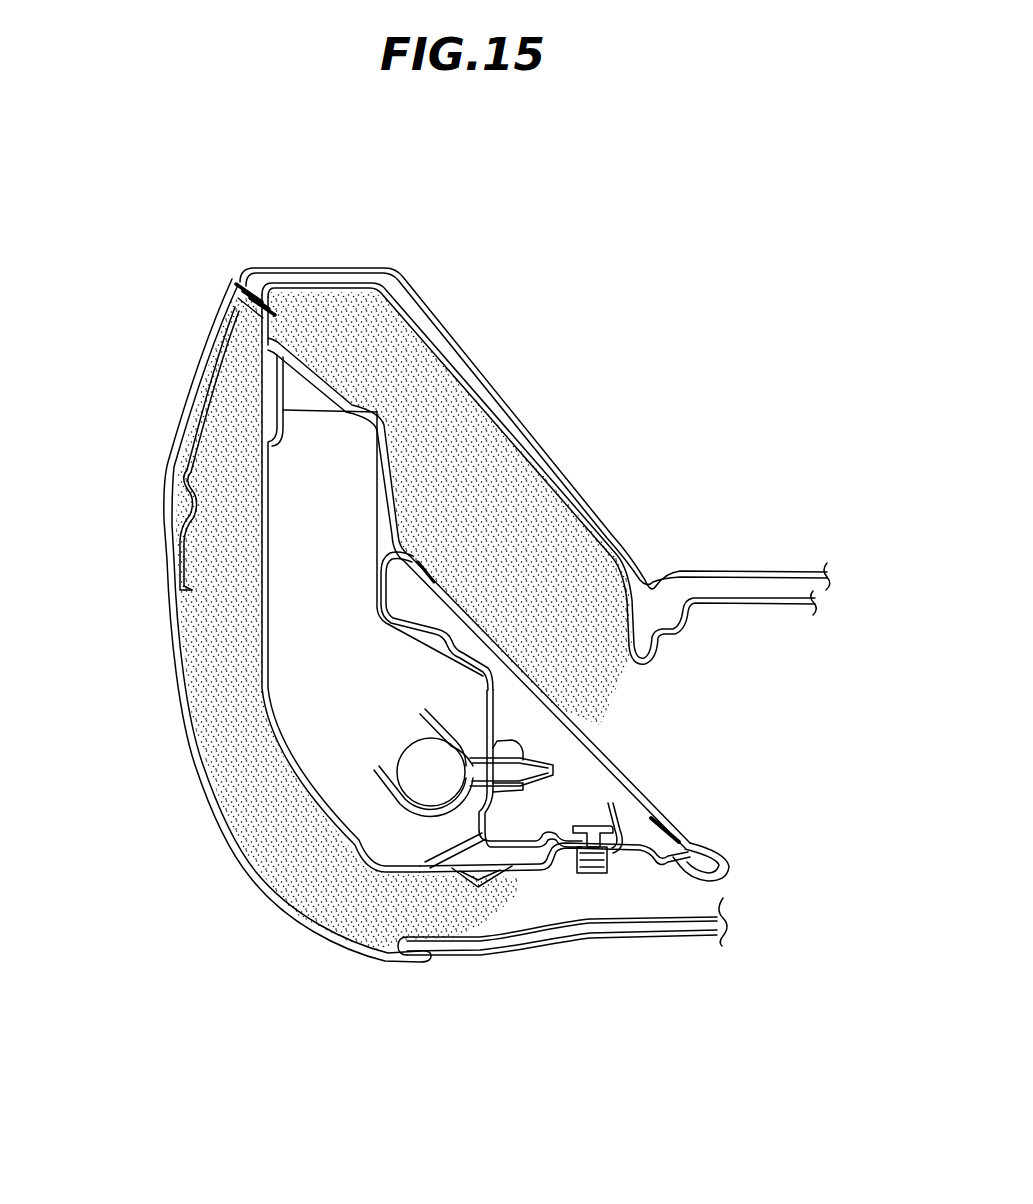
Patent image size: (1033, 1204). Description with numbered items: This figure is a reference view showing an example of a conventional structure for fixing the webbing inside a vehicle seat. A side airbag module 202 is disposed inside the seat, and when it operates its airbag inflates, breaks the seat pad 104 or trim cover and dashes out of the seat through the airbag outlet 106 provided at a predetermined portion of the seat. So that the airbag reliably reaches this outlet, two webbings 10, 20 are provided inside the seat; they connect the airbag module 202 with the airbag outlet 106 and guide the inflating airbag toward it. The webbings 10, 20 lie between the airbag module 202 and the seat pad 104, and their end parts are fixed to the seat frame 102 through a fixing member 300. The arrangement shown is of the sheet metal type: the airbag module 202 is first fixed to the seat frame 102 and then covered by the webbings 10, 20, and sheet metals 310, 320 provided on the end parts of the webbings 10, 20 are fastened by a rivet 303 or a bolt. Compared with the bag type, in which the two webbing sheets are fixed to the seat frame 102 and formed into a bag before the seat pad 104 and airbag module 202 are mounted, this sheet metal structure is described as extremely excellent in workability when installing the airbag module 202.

The webbing 10 is at (283, 408).
The webbing 20 is at (323, 383).
The seat frame 102 is at (548, 832).
The seat pad 104 is at (452, 428).
The airbag outlet 106 is at (224, 266).
The airbag module 202 is at (318, 630).
The fixing member 300 is at (672, 890).
The rivet 303 is at (612, 803).
The sheet metal 310 is at (548, 874).
The sheet metal 320 is at (700, 846).